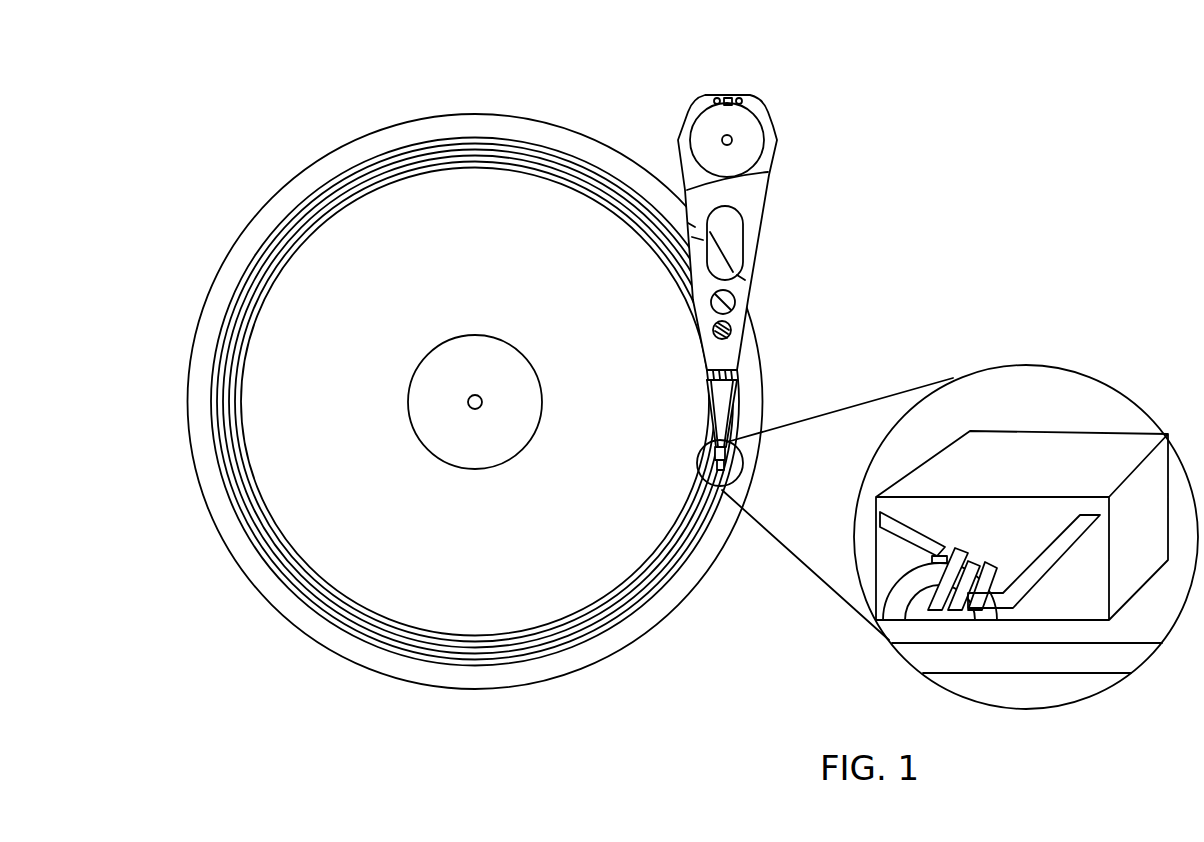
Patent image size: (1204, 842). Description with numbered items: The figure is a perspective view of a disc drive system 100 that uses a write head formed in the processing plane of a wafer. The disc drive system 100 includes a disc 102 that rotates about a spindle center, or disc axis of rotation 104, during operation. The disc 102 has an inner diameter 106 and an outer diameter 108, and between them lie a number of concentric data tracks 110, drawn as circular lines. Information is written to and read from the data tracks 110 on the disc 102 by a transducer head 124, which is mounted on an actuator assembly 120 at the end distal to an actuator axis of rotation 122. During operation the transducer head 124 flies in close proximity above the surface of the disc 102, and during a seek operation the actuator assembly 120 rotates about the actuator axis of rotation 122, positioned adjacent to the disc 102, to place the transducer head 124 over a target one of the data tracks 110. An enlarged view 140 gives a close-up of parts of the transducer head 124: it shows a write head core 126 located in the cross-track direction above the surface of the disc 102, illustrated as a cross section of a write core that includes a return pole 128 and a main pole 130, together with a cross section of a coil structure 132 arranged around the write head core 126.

The disc drive system 100 is at (245, 92).
The disc 102 is at (541, 121).
The disc axis of rotation 104 is at (468, 399).
The inner diameter 106 is at (447, 345).
The outer diameter 108 is at (369, 158).
The data tracks 110 is at (254, 535).
The actuator assembly 120 is at (767, 205).
The actuator axis of rotation 122 is at (732, 141).
The transducer head 124 is at (1027, 455).
The write head core 126 is at (883, 560).
The return pole 128 is at (883, 609).
The main pole 130 is at (1006, 634).
The coil structure 132 is at (905, 533).
The enlarged view 140 is at (1107, 694).